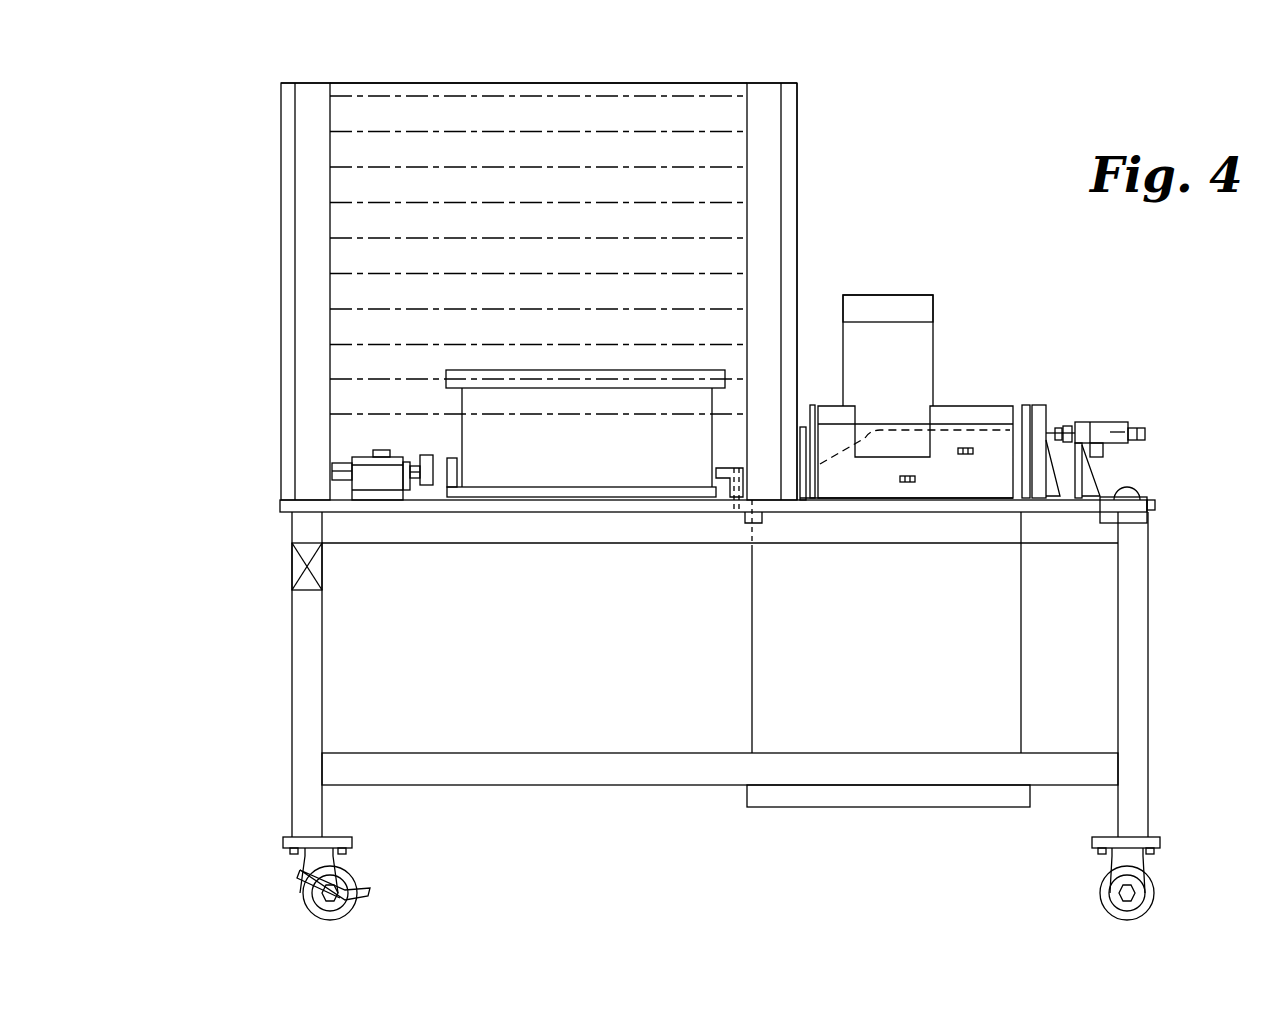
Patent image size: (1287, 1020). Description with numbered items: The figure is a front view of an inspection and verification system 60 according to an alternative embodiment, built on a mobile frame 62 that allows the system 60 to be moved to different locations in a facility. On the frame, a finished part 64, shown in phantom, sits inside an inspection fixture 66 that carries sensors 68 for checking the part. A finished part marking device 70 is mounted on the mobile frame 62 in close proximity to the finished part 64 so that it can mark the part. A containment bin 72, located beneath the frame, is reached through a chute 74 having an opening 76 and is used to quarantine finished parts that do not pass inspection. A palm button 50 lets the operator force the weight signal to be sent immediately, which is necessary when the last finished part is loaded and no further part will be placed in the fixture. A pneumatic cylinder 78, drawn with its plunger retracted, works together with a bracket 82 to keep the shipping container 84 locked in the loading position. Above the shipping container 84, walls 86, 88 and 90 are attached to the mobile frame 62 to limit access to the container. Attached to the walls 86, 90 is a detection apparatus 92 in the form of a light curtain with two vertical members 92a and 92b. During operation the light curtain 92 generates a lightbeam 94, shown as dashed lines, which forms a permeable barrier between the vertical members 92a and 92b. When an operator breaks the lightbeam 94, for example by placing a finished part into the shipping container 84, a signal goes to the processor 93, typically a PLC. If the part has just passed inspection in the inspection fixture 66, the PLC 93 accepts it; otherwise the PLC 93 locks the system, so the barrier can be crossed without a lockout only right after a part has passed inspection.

The palm button 50 is at (1158, 505).
The inspection and verification system 60 is at (668, 693).
The mobile frame 62 is at (1150, 640).
The finished part 64 is at (1018, 405).
The inspection fixture 66 is at (985, 406).
The sensors 68 is at (908, 480).
The finished part marking device 70 is at (1110, 420).
The containment bin 72 is at (855, 807).
The chute 74 is at (933, 330).
The opening 76 is at (900, 295).
The pneumatic cylinder 78 is at (386, 503).
The bracket 82 is at (727, 468).
The shipping container 84 is at (446, 378).
The wall 86 is at (526, 256).
The wall 88 is at (668, 162).
The wall 90 is at (800, 140).
The detection apparatus 92 is at (453, 70).
The vertical member 92a is at (305, 83).
The vertical member 92b is at (760, 83).
The processor 93 is at (290, 570).
The lightbeam 94 is at (528, 143).